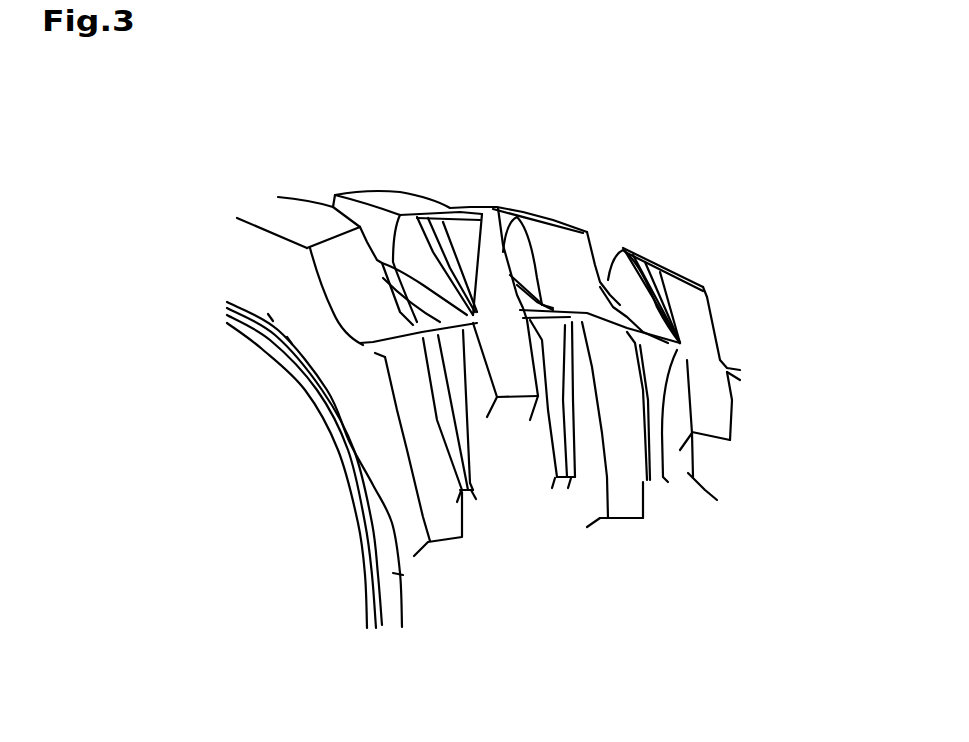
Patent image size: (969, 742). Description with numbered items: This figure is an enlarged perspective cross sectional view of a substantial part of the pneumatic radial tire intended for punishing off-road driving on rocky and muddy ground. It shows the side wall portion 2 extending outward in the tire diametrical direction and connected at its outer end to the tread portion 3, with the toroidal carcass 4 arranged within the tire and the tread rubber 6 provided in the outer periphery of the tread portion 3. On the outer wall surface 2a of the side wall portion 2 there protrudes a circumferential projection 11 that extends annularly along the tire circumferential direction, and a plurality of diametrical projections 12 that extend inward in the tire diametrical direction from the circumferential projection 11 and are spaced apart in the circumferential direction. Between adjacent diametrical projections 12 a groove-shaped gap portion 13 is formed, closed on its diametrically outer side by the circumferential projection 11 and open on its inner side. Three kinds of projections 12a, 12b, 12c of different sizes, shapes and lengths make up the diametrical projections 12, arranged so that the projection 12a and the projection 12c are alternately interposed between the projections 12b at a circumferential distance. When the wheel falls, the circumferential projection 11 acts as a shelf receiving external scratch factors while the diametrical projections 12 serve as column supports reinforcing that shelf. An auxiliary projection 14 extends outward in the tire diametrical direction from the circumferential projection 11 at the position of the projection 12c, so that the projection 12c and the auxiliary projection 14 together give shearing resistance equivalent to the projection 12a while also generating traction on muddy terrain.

The side wall portion 2 is at (518, 594).
The outer wall surface 2a is at (399, 600).
The tread portion 3 is at (293, 170).
The carcass 4 is at (320, 388).
The tread rubber 6 is at (243, 256).
The circumferential projection 11 is at (372, 357).
The diametrical projection 12 is at (596, 482).
The projection 12a is at (443, 538).
The projection 12b is at (560, 467).
The projection 12c is at (708, 440).
The gap portion 13 is at (587, 474).
The auxiliary projection 14 is at (470, 243).